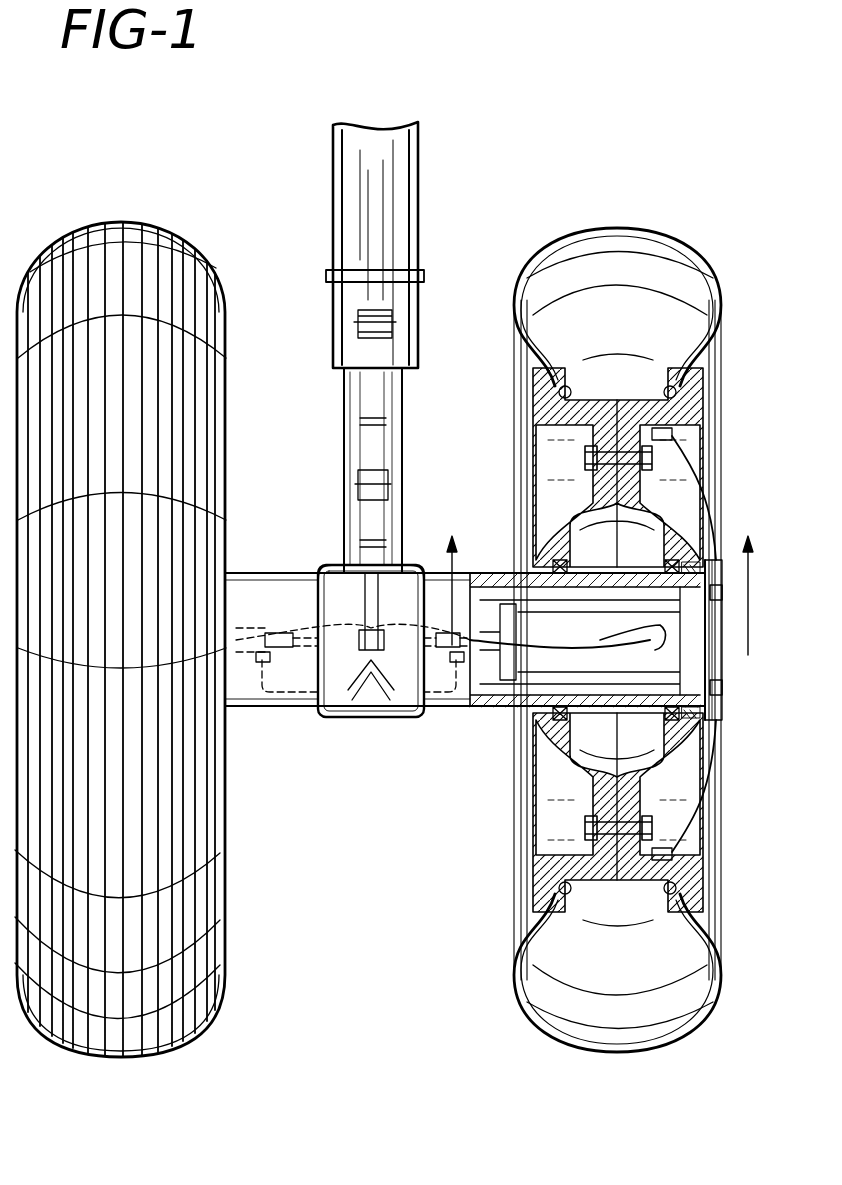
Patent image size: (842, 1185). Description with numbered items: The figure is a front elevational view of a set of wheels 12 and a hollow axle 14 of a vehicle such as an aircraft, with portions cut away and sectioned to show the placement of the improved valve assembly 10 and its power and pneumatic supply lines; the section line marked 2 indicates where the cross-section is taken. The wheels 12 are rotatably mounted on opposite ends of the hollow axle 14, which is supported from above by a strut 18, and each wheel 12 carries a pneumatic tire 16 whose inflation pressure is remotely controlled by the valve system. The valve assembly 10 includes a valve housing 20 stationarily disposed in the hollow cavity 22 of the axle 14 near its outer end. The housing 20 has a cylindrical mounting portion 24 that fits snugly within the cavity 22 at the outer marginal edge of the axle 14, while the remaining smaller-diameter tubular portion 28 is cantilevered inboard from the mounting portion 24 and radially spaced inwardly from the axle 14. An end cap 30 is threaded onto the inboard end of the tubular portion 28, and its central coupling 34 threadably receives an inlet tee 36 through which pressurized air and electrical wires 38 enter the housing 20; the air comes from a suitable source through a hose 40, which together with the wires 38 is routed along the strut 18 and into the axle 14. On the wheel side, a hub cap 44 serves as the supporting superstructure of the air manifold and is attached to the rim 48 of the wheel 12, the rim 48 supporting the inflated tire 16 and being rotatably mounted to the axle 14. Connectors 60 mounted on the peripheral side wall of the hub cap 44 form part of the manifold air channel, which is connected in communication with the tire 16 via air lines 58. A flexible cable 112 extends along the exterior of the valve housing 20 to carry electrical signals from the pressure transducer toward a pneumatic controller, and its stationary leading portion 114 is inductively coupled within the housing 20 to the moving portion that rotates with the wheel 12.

The section line 2- 2 is at (598, 582).
The valve assembly 10 is at (465, 642).
The wheel 12 is at (377, 591).
The hollow axle 14 is at (305, 722).
The pneumatic tire 16 is at (198, 244).
The strut 18 is at (418, 145).
The valve housing 20 is at (690, 690).
The hollow cavity 22 is at (530, 780).
The cylindrical mounting portion 24 is at (708, 700).
The tubular portion 28 is at (500, 602).
The end cap 30 is at (470, 580).
The central coupling 34 is at (270, 710).
The inlet tee 36 is at (289, 575).
The electrical wires 38 is at (328, 572).
The hose 40 is at (389, 712).
The hub cap 44 is at (716, 710).
The rim 48 is at (665, 512).
The air lines 58 is at (716, 433).
The connectors 60 is at (718, 524).
The flexible cable 112 is at (257, 575).
The leading portion 114 is at (655, 650).